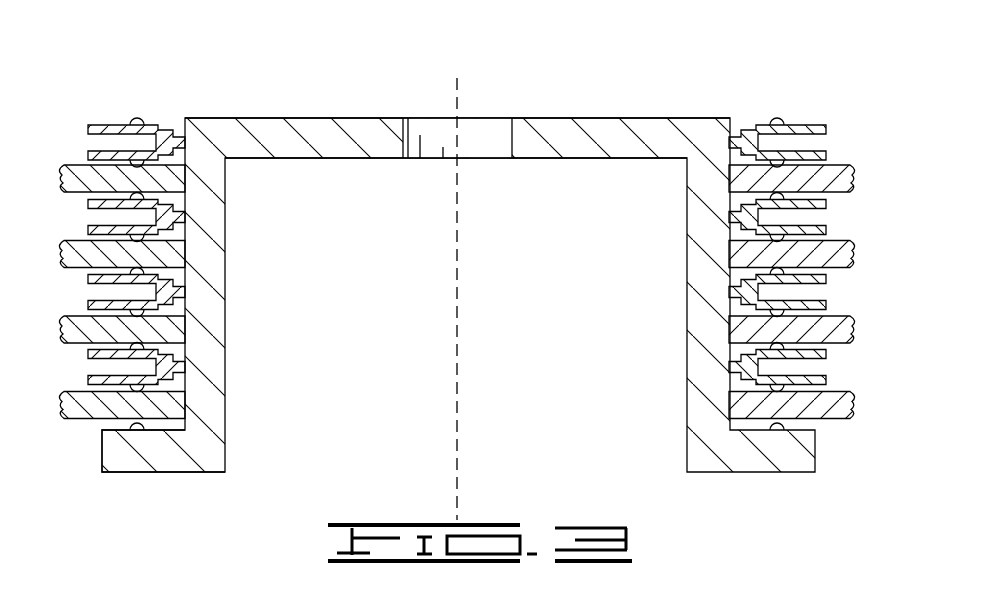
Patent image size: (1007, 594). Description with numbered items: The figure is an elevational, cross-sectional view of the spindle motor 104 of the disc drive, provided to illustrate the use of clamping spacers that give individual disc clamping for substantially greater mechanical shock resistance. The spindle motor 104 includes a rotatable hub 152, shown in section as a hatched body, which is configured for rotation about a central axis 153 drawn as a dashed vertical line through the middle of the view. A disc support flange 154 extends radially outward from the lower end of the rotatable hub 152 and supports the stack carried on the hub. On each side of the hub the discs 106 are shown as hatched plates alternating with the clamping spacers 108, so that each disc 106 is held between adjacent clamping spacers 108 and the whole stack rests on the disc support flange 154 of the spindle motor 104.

The spindle motor 104 is at (600, 64).
The discs 106 is at (832, 167).
The clamping spacers 108 is at (139, 117).
The rotatable hub 152 is at (322, 110).
The central axis 153 is at (459, 336).
The disc support flange 154 is at (195, 462).